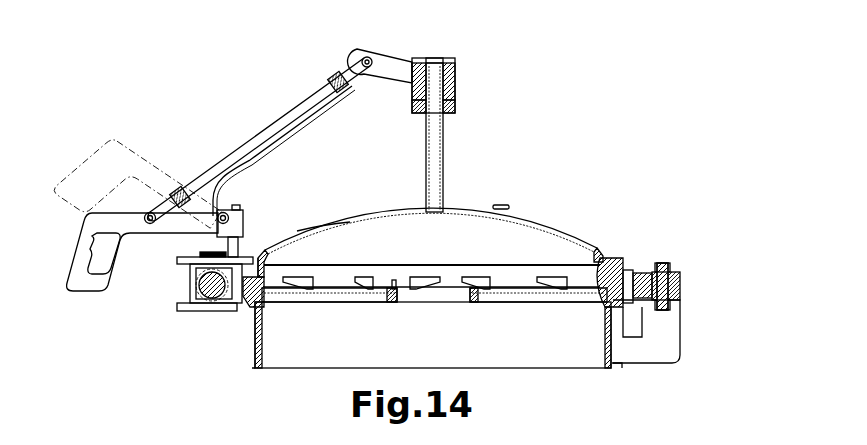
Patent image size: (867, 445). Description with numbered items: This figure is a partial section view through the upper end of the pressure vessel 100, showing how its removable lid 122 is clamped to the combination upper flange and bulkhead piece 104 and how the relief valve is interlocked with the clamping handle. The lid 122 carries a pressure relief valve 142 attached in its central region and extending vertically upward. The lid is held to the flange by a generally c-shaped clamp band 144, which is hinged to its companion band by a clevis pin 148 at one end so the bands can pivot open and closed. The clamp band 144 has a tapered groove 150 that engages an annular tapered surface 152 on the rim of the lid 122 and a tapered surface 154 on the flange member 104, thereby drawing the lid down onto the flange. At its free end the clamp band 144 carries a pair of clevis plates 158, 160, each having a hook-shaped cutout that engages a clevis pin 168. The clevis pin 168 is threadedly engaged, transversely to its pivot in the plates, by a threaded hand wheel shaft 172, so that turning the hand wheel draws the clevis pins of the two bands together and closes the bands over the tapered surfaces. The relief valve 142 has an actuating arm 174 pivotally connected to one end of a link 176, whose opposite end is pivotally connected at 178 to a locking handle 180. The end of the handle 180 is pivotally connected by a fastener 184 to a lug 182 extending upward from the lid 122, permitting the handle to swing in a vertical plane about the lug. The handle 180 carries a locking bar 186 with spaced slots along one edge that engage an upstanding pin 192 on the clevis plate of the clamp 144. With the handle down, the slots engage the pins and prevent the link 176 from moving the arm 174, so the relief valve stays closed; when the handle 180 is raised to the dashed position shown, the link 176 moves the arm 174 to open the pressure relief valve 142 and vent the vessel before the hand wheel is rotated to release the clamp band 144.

The pressure vessel 100 is at (527, 133).
The combination upper flange and bulkhead piece 104 is at (252, 336).
The removable lid 122 is at (548, 205).
The pressure relief valve 142 is at (480, 85).
The clamp band 144 is at (625, 268).
The clevis pin 148 is at (678, 270).
The tapered groove 150 is at (599, 265).
The annular tapered surface 152 is at (256, 276).
The tapered surface 154 is at (250, 305).
The clevis plate 158 is at (180, 262).
The clevis plate 160 is at (178, 308).
The clevis pin 168 is at (188, 281).
The threaded hand wheel shaft 172 is at (208, 290).
The actuating arm 174 is at (396, 62).
The link 176 is at (300, 100).
The pivotal connection 178 is at (148, 214).
The locking handle 180 is at (73, 250).
The lug 182 is at (298, 230).
The fastener 184 is at (222, 212).
The locking bar 186 is at (220, 213).
The upstanding pin 192 is at (201, 240).